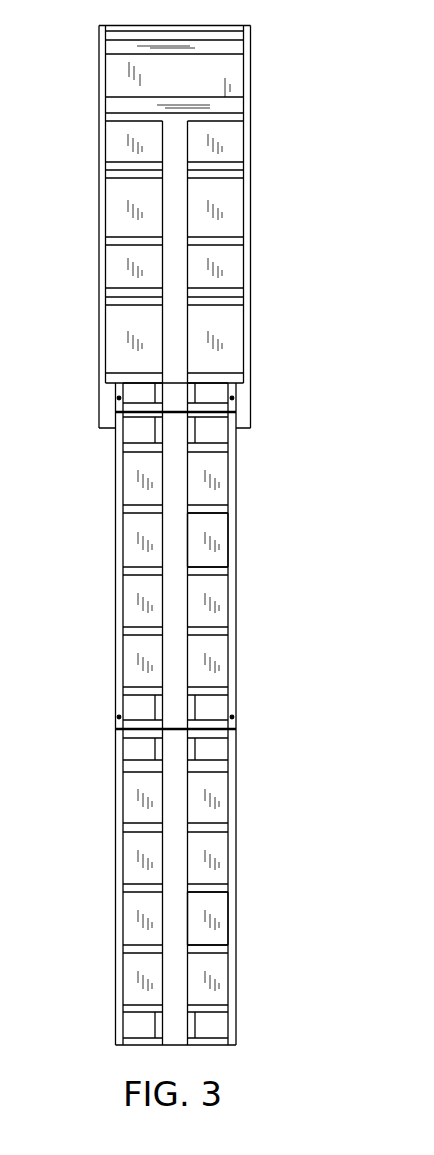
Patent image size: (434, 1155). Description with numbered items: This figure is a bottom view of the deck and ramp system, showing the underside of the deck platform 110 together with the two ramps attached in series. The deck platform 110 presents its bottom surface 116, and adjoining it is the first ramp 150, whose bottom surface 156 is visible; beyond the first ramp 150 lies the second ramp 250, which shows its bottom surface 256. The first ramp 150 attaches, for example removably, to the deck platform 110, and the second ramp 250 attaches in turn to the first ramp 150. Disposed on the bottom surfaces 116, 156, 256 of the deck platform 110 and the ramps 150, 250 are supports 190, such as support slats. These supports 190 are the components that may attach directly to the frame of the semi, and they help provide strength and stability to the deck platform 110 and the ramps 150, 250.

The deck platform 110 is at (251, 138).
The bottom surface 116 is at (205, 72).
The supports 190 is at (114, 173).
The first ramp 150 is at (236, 520).
The bottom surface 156 is at (212, 547).
The second ramp 250 is at (236, 885).
The bottom surface 256 is at (203, 933).